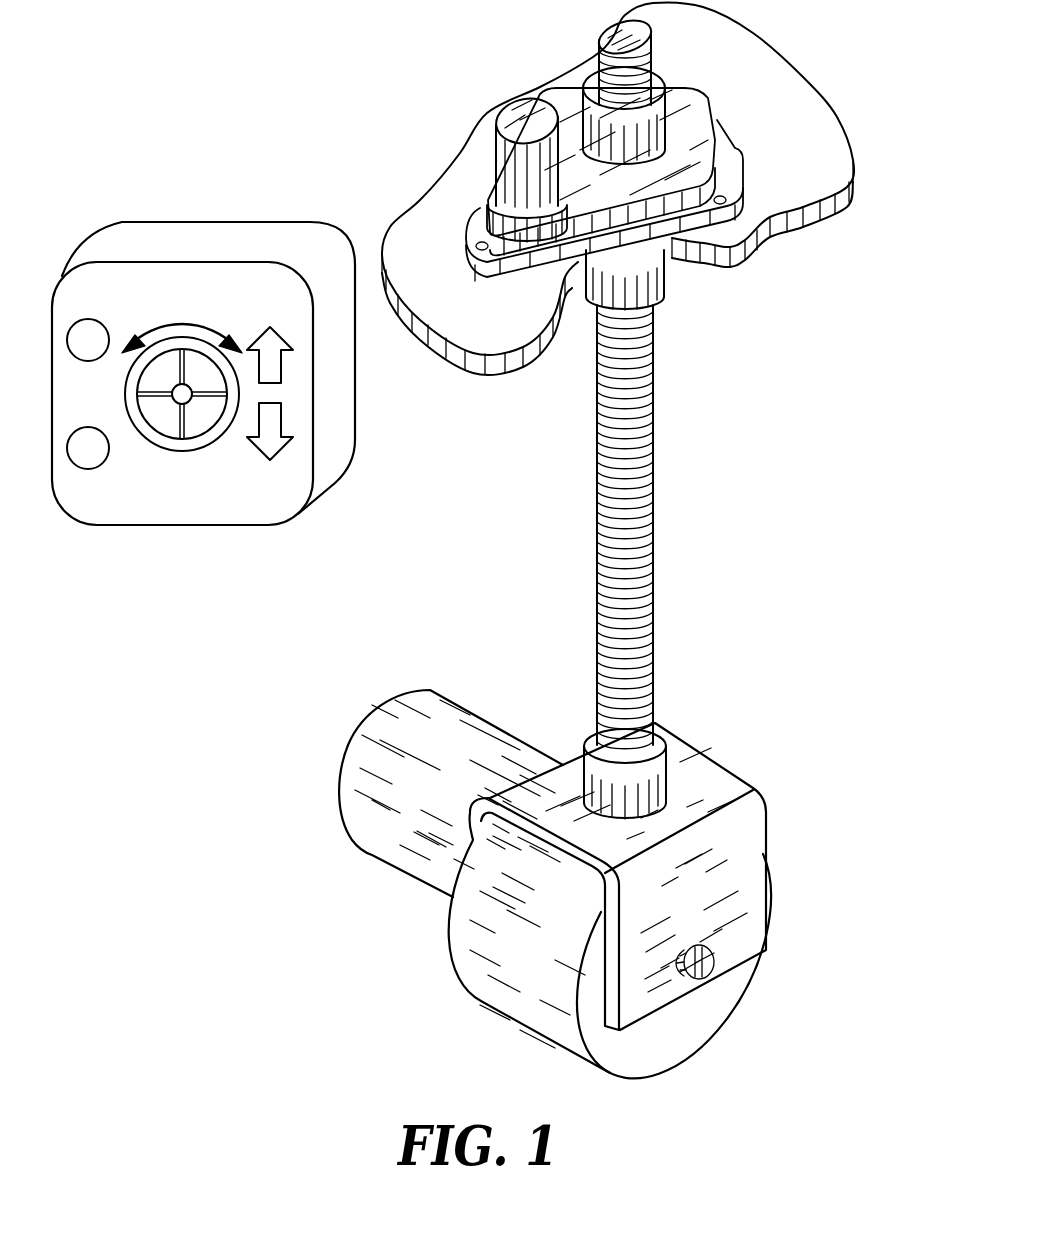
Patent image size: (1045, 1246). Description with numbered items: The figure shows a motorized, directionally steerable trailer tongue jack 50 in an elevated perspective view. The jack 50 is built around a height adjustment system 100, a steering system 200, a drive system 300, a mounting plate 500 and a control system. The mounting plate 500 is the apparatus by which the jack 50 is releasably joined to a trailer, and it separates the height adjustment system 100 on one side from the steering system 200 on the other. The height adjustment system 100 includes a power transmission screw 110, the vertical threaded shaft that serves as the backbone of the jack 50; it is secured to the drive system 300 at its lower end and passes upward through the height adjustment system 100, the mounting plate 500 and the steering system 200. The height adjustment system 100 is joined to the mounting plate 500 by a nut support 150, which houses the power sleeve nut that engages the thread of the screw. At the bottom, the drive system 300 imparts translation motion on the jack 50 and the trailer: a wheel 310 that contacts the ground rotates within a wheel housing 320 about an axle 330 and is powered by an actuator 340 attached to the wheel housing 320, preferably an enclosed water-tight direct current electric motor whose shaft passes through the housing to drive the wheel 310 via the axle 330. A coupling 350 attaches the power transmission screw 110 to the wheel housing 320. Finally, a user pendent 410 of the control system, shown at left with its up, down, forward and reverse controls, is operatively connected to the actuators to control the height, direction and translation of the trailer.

The jack 50 is at (740, 469).
The height adjustment system 100 is at (702, 265).
The power transmission screw 110 is at (600, 508).
The nut support 150 is at (668, 302).
The steering system 200 is at (455, 124).
The drive system 300 is at (790, 768).
The wheel 310 is at (440, 936).
The wheel housing 320 is at (612, 1030).
The axle 330 is at (714, 960).
The actuator 340 is at (362, 733).
The coupling 350 is at (666, 762).
The user pendent 410 is at (240, 208).
The mounting plate 500 is at (600, 24).